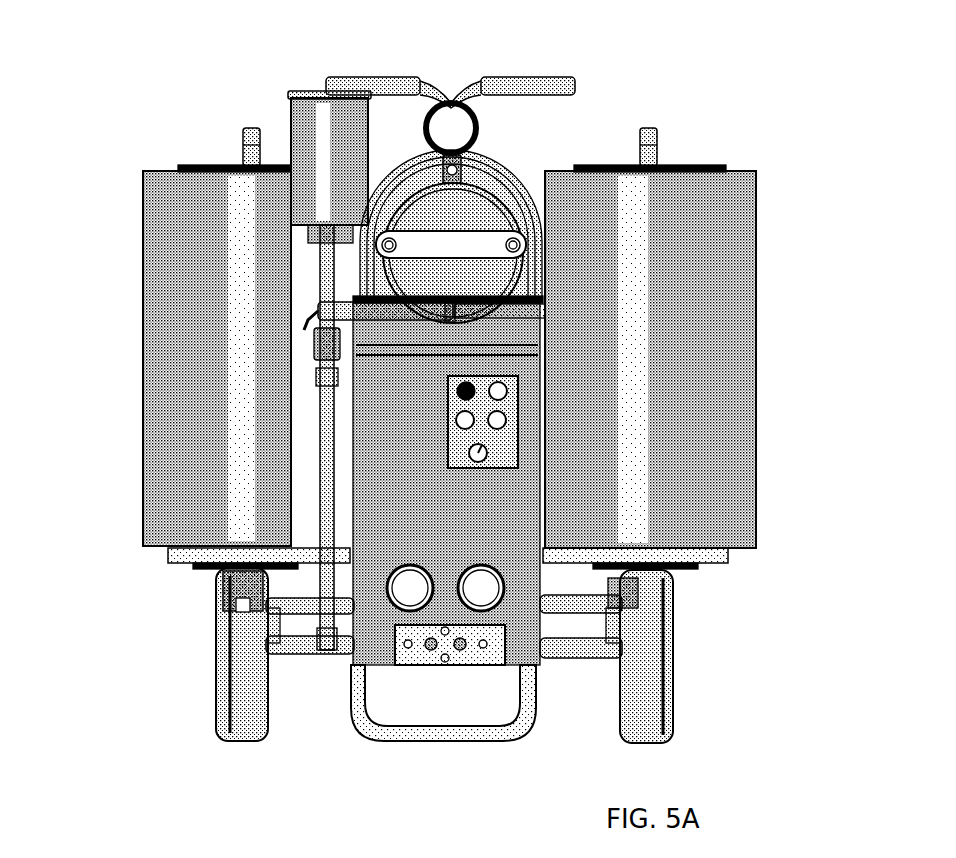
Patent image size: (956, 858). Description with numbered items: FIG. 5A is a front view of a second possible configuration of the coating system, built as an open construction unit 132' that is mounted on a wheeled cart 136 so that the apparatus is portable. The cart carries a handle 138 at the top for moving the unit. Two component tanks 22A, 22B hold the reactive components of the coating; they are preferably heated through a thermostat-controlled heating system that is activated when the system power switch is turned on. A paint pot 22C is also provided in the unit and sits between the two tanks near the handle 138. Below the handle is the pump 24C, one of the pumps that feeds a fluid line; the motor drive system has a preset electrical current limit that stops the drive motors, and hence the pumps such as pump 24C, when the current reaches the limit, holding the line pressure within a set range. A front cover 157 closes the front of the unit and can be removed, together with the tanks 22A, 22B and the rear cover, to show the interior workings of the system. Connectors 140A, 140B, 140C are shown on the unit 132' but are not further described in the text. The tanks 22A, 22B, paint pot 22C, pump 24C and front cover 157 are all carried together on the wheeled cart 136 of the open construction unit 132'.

The tank 22A is at (745, 252).
The tank 22B is at (135, 245).
The paint pot 22C is at (298, 85).
The pump 24C is at (462, 200).
The open construction unit 132' is at (511, 446).
The wheeled cart 136 is at (197, 660).
The handle 138 is at (516, 68).
The first connector 140A is at (478, 642).
The second connector 140B is at (400, 642).
The third connector 140C is at (452, 165).
The front cover 157 is at (215, 580).